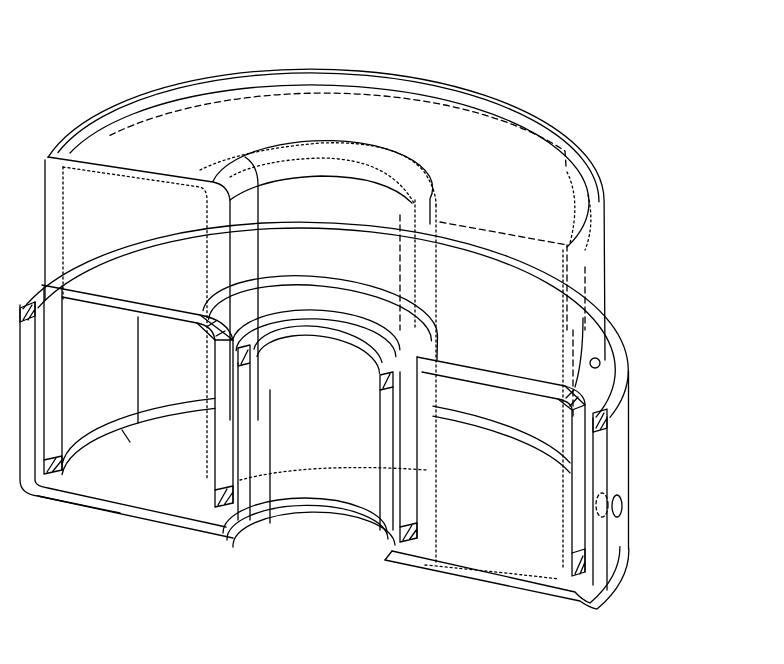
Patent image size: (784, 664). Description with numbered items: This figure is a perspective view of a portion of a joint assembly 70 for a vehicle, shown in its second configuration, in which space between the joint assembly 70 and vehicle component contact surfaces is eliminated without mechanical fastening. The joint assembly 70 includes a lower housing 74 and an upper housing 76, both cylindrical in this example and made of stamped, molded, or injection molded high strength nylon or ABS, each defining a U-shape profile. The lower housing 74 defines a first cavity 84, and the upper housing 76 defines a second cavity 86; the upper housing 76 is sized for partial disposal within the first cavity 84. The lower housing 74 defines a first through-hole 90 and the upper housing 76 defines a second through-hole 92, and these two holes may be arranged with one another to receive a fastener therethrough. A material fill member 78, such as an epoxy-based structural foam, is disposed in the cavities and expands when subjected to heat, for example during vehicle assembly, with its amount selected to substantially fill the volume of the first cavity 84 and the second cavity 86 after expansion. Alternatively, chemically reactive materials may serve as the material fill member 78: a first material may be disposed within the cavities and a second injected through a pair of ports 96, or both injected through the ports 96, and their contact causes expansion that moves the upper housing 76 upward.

The joint assembly 70 is at (658, 84).
The lower housing 74 is at (628, 465).
The upper housing 76 is at (378, 79).
The material fill member 78 is at (89, 494).
The first cavity 84 is at (498, 572).
The second cavity 86 is at (524, 322).
The first through-hole 90 is at (263, 520).
The second through-hole 92 is at (275, 162).
The ports 96 is at (600, 363).